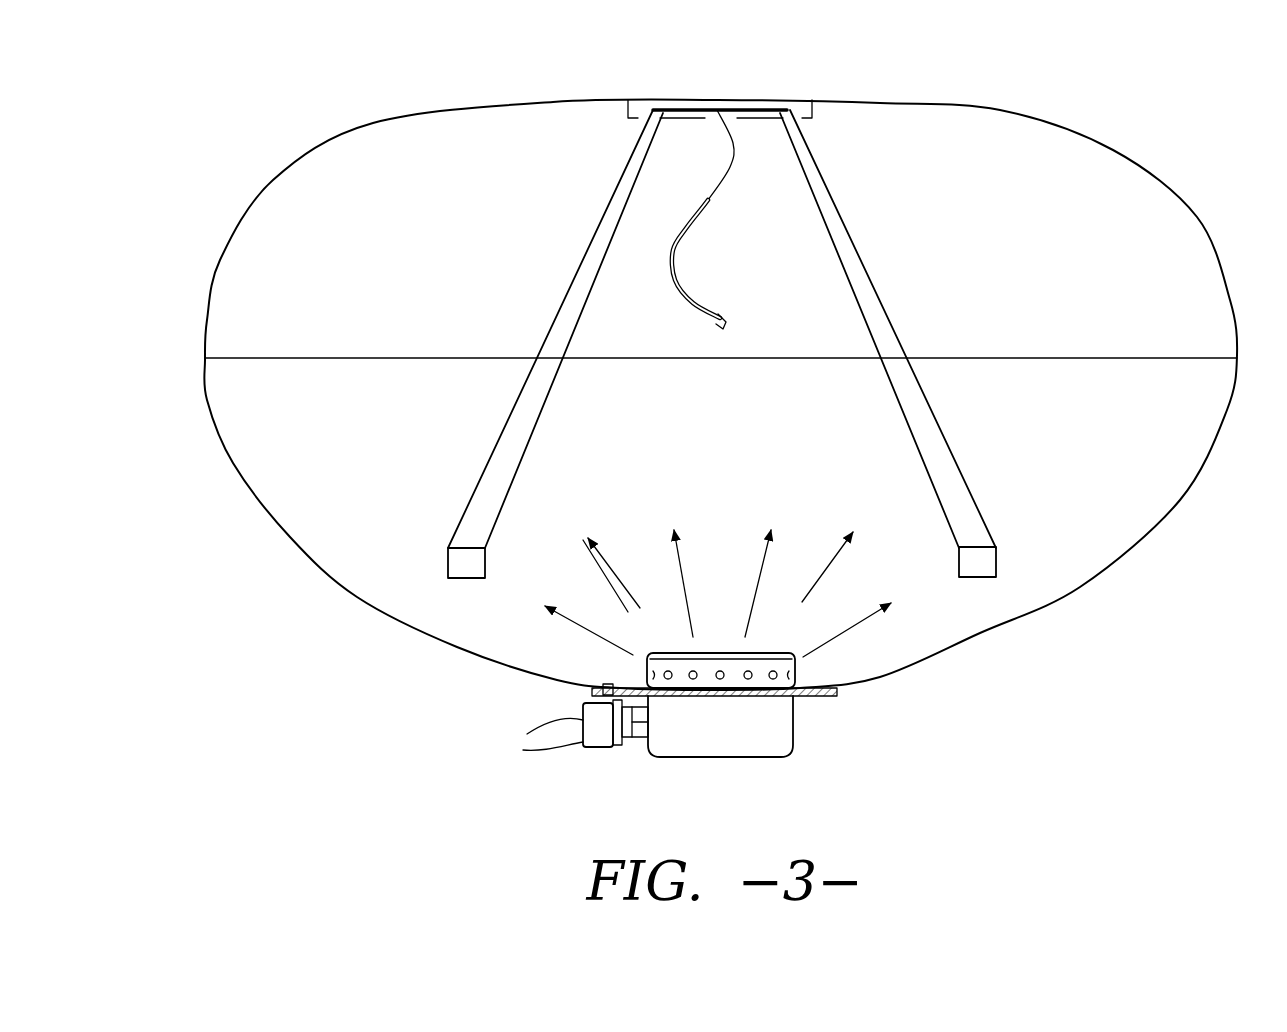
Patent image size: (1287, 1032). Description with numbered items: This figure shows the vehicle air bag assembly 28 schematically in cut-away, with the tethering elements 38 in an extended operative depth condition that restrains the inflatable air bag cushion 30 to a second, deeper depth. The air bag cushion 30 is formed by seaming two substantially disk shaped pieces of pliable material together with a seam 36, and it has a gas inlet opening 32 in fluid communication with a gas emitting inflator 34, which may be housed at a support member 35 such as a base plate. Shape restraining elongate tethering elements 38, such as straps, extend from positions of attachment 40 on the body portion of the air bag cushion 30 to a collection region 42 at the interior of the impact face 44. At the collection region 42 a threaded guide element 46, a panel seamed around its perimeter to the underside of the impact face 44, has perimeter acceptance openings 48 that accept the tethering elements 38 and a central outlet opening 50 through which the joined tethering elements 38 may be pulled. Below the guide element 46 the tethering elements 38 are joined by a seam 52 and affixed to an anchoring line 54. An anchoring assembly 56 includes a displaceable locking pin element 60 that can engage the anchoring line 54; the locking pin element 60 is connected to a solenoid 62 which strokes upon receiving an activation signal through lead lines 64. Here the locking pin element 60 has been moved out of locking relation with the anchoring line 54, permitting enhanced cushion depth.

The air bag assembly 28 is at (717, 423).
The inflatable air bag cushion 30 is at (1200, 216).
The gas inlet opening 32 is at (729, 641).
The gas emitting inflator 34 is at (740, 757).
The support member 35 is at (763, 697).
The seam 36 is at (253, 358).
The tethering elements 38 is at (497, 442).
The positions of attachment 40 is at (460, 565).
The collection region 42 is at (719, 105).
The impact face 44 is at (998, 110).
The threaded guide element 46 is at (677, 120).
The perimeter acceptance openings 48 is at (793, 117).
The central outlet opening 50 is at (733, 120).
The seam 52 is at (715, 115).
The anchoring line 54 is at (720, 203).
The anchoring assembly 56 is at (623, 752).
The locking pin element 60 is at (628, 737).
The solenoid 62 is at (583, 747).
The lead lines 64 is at (553, 718).